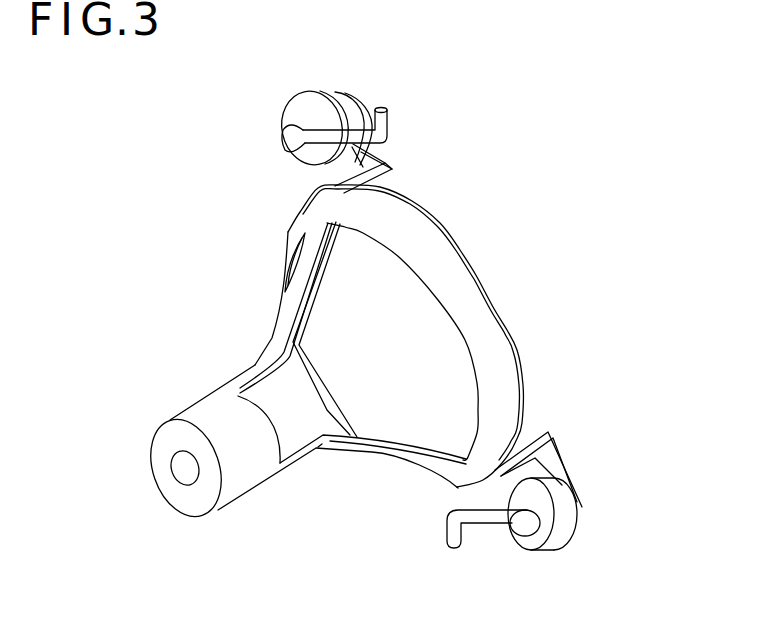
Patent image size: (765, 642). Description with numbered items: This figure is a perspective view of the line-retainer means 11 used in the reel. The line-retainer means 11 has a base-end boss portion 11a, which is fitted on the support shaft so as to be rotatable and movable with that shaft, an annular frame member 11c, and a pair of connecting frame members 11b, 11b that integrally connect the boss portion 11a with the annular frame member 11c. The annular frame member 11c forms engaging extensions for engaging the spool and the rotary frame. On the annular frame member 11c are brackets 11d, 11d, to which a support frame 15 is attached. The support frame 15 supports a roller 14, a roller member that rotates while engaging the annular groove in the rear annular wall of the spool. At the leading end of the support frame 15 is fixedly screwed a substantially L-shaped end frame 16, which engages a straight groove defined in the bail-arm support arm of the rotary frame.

The line-retainer means 11 is at (182, 246).
The base-end boss portion 11a is at (243, 488).
The connecting frame members 11b is at (278, 316).
The annular frame member 11c is at (468, 283).
The brackets 11d is at (390, 176).
The roller 14 is at (288, 106).
The support frame 15 is at (353, 95).
The end frame 16 is at (388, 123).